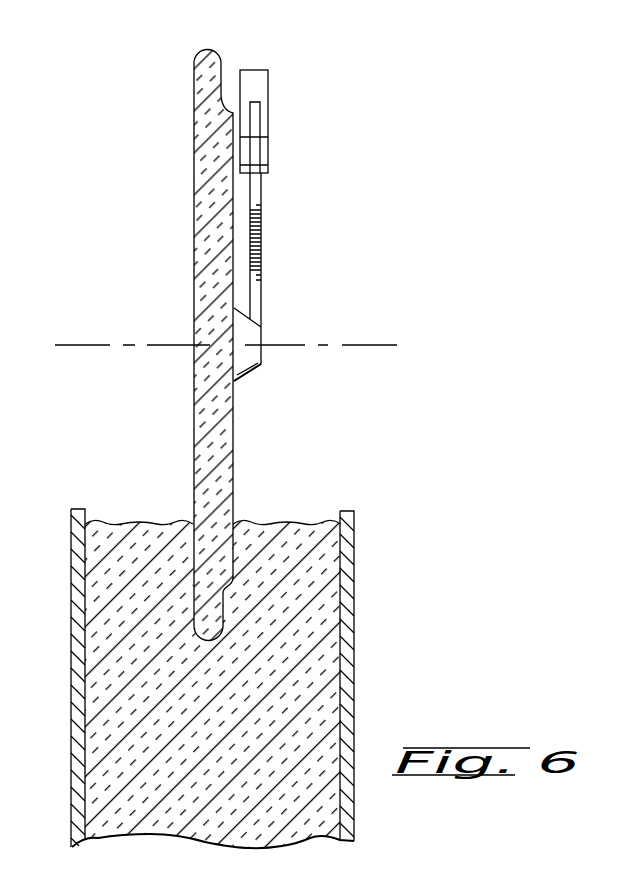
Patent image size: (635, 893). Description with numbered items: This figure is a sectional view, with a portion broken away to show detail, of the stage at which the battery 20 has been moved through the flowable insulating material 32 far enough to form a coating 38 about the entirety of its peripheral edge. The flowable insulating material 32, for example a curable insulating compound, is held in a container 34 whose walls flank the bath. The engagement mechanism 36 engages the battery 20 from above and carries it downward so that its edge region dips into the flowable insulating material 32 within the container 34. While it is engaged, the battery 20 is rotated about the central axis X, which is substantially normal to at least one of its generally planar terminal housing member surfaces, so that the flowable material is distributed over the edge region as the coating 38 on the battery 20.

The battery 20 is at (206, 344).
The flowable insulating material 32 is at (289, 447).
The container 34 is at (343, 510).
The engagement mechanism 36 is at (272, 94).
The coating 38 is at (212, 452).
The central axis X is at (82, 344).